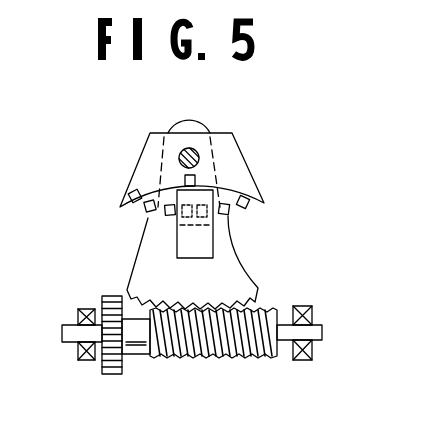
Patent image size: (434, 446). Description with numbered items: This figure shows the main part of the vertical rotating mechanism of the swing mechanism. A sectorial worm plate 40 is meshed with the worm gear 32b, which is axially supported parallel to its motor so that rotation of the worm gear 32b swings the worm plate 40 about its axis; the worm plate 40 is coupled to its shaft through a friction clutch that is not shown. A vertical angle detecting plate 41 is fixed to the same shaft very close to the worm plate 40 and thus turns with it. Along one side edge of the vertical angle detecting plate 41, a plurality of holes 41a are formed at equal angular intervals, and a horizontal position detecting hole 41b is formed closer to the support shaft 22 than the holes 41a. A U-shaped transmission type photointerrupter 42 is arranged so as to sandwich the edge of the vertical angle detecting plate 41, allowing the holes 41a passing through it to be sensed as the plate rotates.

The support shaft 22 is at (183, 150).
The worm gear 32b is at (215, 342).
The sectorial worm plate 40 is at (160, 280).
The vertical angle detecting plate 41 is at (198, 179).
The holes 41a is at (158, 172).
The horizontal position detecting hole 41b is at (214, 172).
The U-shaped transmission type photointerrupter 42 is at (197, 238).